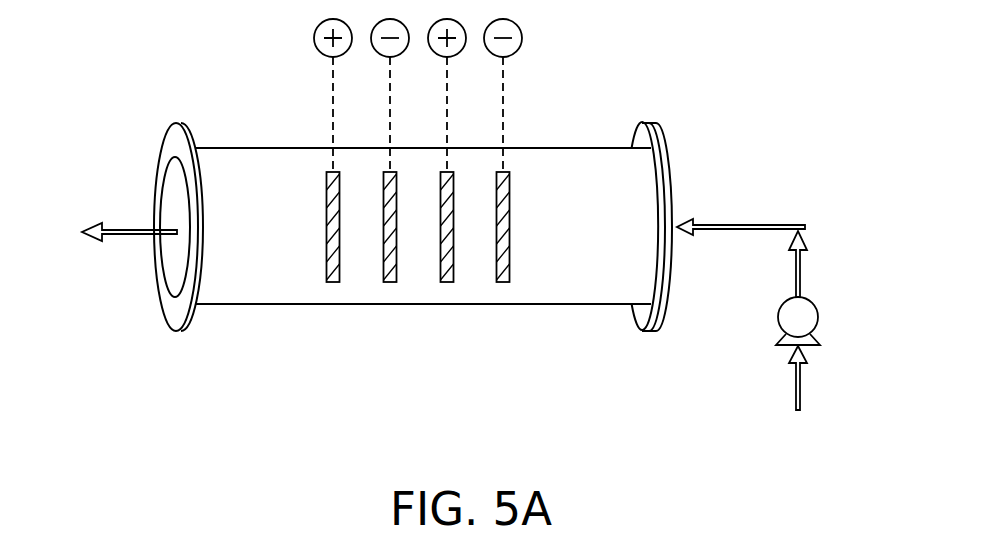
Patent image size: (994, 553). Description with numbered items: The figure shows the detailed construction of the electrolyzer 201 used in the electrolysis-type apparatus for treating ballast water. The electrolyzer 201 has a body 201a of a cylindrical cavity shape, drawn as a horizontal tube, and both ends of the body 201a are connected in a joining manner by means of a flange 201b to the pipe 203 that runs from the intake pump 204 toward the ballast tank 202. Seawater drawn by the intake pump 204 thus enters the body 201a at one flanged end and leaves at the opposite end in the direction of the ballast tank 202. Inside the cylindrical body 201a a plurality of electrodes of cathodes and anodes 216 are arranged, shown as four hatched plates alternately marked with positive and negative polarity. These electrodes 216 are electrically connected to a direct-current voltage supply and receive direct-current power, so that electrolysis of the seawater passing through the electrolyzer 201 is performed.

The electrolyzer 201 is at (452, 233).
The body 201a is at (585, 298).
The flange 201b is at (172, 329).
The ballast tank 202 is at (102, 232).
The pipe 203 is at (803, 380).
The intake pump 204 is at (818, 313).
The electrodes of cathodes and anodes 216 is at (503, 282).